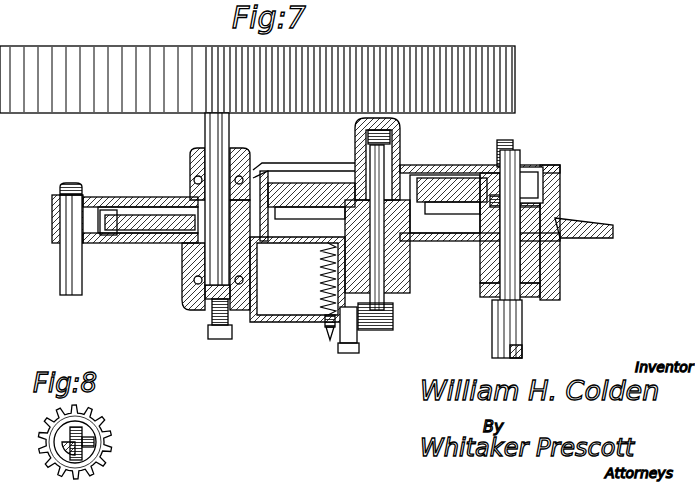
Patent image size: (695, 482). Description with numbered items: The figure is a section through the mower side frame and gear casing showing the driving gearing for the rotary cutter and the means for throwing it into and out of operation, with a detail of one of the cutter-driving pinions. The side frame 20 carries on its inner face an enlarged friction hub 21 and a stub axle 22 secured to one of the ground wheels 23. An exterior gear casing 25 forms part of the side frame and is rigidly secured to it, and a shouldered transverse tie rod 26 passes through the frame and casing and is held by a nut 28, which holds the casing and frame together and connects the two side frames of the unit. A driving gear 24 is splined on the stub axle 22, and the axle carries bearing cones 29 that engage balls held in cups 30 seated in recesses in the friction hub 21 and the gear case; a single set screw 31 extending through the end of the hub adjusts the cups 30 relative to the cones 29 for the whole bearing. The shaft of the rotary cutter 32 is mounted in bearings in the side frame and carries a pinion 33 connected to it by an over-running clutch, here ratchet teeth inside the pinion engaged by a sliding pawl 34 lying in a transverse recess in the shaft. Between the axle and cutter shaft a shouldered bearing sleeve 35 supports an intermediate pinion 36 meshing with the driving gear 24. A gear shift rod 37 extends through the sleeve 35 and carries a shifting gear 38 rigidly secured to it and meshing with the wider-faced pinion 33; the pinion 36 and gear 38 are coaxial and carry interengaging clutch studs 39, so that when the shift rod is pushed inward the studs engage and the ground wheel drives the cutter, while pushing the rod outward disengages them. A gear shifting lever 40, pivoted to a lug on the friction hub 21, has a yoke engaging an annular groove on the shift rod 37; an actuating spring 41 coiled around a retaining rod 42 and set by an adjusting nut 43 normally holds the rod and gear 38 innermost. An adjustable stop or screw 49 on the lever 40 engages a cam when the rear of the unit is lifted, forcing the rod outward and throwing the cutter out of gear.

In FIG. 7, the side frame 20 is at (145, 245).
In FIG. 7, the friction hub 21 is at (190, 268).
In FIG. 7, the stub axle 22 is at (207, 128).
In FIG. 7, the ground wheel 23 is at (513, 83).
In FIG. 7, the driving gear 24 is at (135, 218).
In FIG. 7, the gear casing 25 is at (290, 168).
In FIG. 7, the tie rod 26 is at (65, 270).
In FIG. 7, the nut 28 is at (62, 190).
In FIG. 7, the bearing cone 29 is at (190, 200).
In FIG. 7, the cup 30 is at (248, 170).
In FIG. 7, the set screw 31 is at (215, 340).
In FIG. 7, the shaft of rotary cutter 32 is at (525, 333).
In FIG. 8, the shaft of rotary cutter 32 is at (96, 446).
In FIG. 7, the pinion 33 is at (545, 185).
In FIG. 8, the pinion 33 is at (100, 425).
In FIG. 7, the sliding pawl 34 is at (548, 200).
In FIG. 8, the sliding pawl 34 is at (92, 440).
In FIG. 7, the bearing sleeve 35 is at (410, 268).
In FIG. 7, the intermediate pinion 36 is at (418, 240).
In FIG. 7, the gear shift rod 37 is at (397, 152).
In FIG. 7, the shifting gear 38 is at (428, 172).
In FIG. 7, the stud 39 is at (466, 178).
In FIG. 7, the gear shifting lever 40 is at (292, 322).
In FIG. 7, the actuating spring 41 is at (322, 260).
In FIG. 7, the retaining rod 42 is at (331, 342).
In FIG. 7, the adjusting nut 43 is at (326, 330).
In FIG. 7, the adjustable stop or screw 49 is at (355, 345).